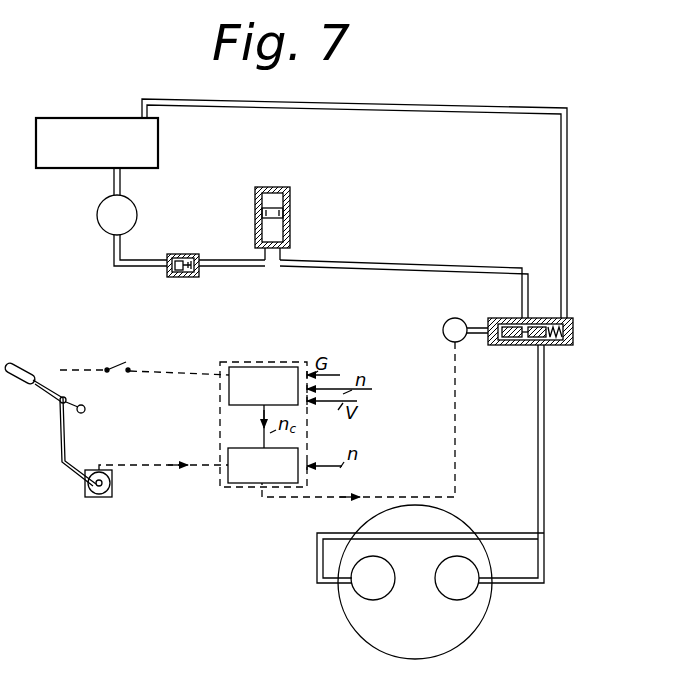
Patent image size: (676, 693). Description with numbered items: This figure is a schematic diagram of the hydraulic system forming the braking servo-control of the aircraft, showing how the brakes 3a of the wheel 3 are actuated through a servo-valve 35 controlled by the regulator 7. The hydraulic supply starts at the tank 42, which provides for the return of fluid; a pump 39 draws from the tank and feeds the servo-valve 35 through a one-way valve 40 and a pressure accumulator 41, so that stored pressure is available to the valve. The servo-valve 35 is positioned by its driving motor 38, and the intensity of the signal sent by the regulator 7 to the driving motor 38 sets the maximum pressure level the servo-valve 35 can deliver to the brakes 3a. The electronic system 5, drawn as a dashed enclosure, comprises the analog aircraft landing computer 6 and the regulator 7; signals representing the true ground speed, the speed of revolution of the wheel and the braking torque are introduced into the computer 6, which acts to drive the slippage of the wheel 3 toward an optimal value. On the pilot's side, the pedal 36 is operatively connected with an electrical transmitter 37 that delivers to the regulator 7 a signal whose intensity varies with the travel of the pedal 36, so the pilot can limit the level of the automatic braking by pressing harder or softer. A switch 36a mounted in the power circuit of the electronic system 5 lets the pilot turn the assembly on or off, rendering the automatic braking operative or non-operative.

The wheel 3 is at (462, 630).
The brakes 3a is at (447, 574).
The electronic system 5 is at (219, 364).
The analog aircraft landing computer 6 is at (243, 367).
The regulator 7 is at (241, 448).
The servo-valve 35 is at (573, 331).
The pedal 36 is at (20, 377).
The switch 36a is at (115, 364).
The electrical transmitter 37 is at (112, 490).
The driving motor 38 is at (446, 327).
The pump 39 is at (127, 211).
The one-way valve 40 is at (197, 277).
The pressure accumulator 41 is at (290, 228).
The tank 42 is at (93, 118).